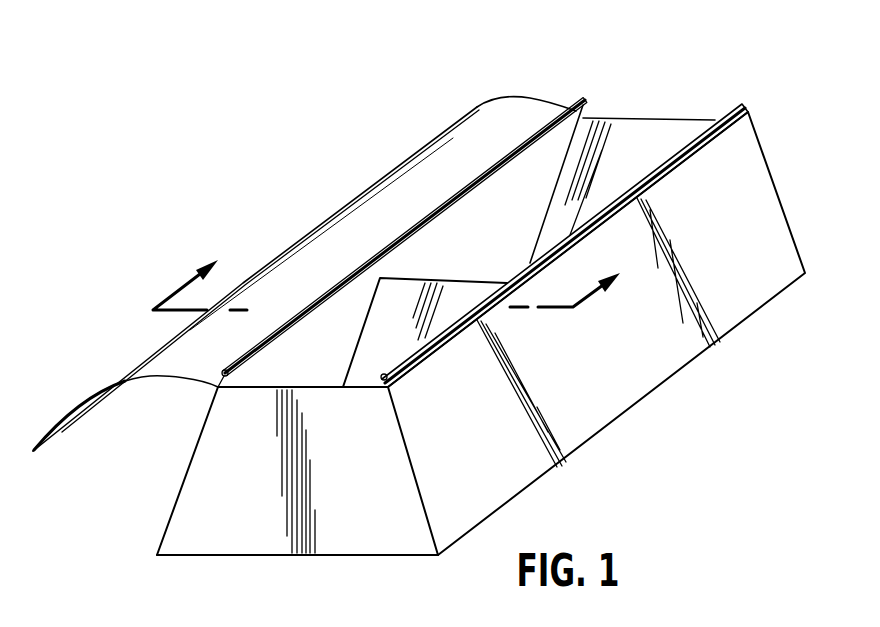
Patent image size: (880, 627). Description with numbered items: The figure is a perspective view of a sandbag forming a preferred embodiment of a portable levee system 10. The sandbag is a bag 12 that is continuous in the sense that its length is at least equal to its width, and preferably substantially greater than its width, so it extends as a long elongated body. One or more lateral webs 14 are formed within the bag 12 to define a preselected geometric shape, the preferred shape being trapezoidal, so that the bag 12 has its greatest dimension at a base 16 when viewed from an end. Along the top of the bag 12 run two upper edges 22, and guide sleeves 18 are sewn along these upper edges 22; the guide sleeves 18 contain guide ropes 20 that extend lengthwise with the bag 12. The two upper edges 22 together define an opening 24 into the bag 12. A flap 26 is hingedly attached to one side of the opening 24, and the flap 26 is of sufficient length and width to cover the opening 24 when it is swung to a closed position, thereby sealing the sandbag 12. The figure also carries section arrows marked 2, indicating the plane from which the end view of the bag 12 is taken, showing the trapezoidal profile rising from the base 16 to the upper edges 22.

The portable levee system 10 is at (441, 72).
The bag 12 is at (756, 216).
The lateral web 14 is at (434, 281).
The base 16 is at (297, 556).
The guide sleeve 18 is at (736, 102).
The guide rope 20 is at (668, 162).
The upper edge 22 is at (229, 373).
The opening 24 is at (620, 135).
The flap 26 is at (422, 167).
The section line 2 is at (391, 278).